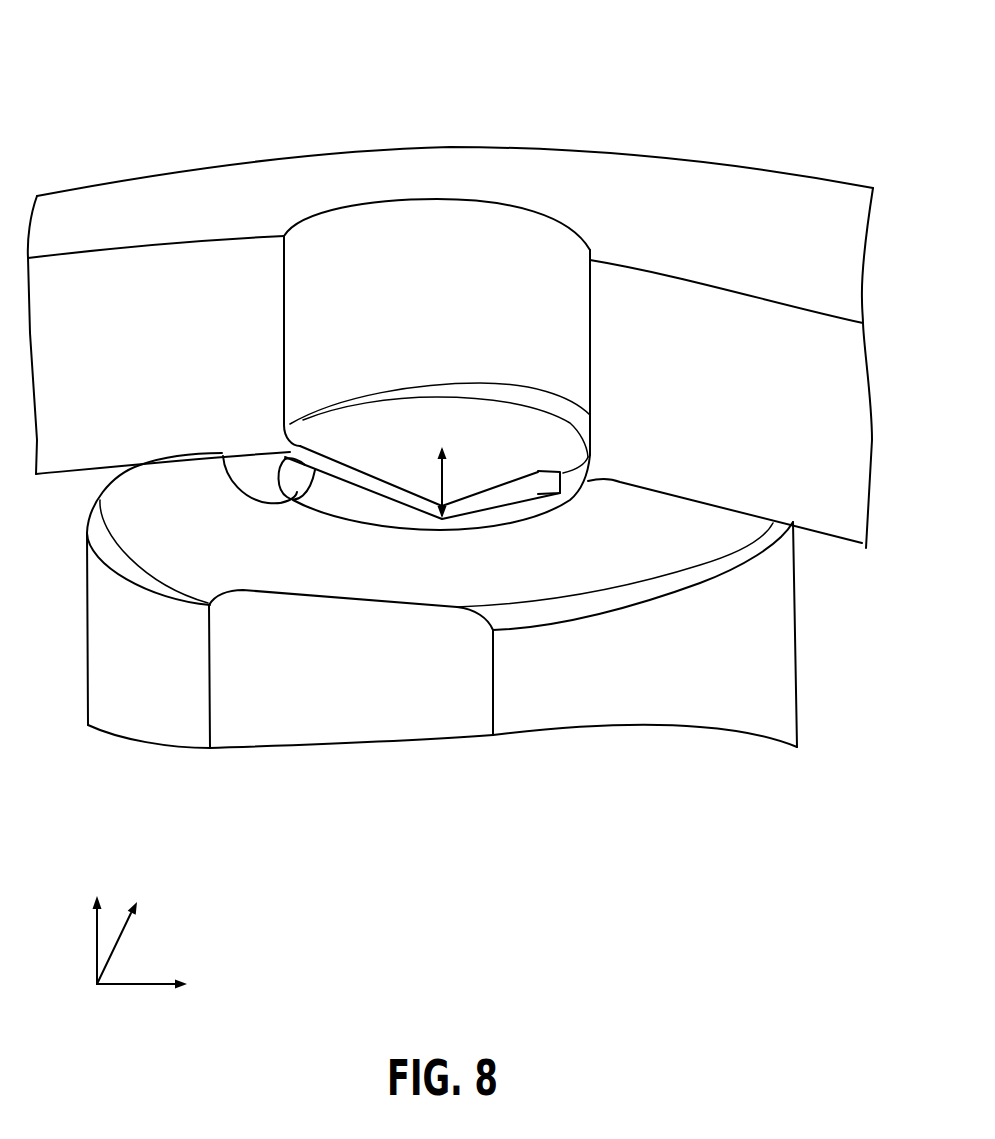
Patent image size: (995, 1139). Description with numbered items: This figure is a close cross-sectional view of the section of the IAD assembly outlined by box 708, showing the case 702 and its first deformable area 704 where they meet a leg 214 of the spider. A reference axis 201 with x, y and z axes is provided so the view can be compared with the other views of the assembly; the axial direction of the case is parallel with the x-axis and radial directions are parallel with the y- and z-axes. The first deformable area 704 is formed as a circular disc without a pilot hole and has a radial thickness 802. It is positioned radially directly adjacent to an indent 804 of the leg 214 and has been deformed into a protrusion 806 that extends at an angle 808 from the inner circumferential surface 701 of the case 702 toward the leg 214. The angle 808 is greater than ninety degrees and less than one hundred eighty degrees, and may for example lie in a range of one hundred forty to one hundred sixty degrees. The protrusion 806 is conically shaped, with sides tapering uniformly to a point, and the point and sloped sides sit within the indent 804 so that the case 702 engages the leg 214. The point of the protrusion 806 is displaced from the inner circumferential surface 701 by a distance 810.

The box 708 is at (92, 60).
The case 702 is at (768, 171).
The inner circumferential surface 701 is at (862, 549).
The first deformable area 704 is at (332, 218).
The protrusion 806 is at (333, 458).
The radial thickness 802 is at (560, 472).
The indent 804 is at (523, 517).
The angle 808 is at (235, 489).
The distance 810 is at (442, 447).
The leg 214 is at (797, 677).
The reference axis 201 is at (64, 875).